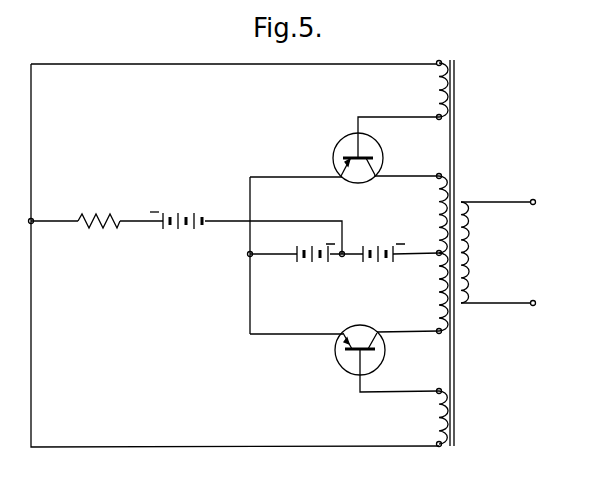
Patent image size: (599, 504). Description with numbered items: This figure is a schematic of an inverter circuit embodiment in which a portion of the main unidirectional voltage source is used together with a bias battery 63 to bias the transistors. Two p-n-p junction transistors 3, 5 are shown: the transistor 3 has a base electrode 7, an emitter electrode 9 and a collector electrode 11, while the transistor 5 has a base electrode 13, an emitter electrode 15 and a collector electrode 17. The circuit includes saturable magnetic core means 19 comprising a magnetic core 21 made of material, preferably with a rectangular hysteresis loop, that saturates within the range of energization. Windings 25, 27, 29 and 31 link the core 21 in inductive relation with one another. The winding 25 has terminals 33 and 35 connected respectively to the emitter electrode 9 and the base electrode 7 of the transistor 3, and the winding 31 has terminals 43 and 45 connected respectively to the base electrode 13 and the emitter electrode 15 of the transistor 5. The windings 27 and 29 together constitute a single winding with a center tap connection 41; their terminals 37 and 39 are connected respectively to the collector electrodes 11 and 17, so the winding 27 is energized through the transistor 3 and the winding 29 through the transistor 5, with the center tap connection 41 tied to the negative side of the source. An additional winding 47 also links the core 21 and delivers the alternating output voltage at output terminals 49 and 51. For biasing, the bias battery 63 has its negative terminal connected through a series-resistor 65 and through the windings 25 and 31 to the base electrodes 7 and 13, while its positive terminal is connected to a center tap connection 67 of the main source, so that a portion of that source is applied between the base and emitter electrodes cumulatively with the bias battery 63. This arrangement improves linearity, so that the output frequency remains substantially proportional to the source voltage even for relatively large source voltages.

The transistor 3 is at (344, 150).
The transistor 5 is at (344, 358).
The base electrode 7 is at (341, 148).
The emitter electrode 9 is at (296, 165).
The collector electrode 11 is at (383, 167).
The base electrode 13 is at (341, 358).
The emitter electrode 15 is at (338, 340).
The collector electrode 17 is at (383, 340).
The saturable magnetic core means 19 is at (480, 252).
The magnetic core 21 is at (455, 134).
The winding 25 is at (437, 88).
The winding 27 is at (438, 214).
The winding 29 is at (438, 296).
The winding 31 is at (438, 418).
The terminal 33 is at (443, 52).
The terminal 35 is at (438, 120).
The terminal 37 is at (438, 174).
The terminal 39 is at (440, 334).
The center tap connection 41 is at (423, 243).
The terminal 43 is at (440, 389).
The terminal 45 is at (441, 448).
The additional winding 47 is at (468, 245).
The output terminal 49 is at (536, 202).
The output terminal 51 is at (536, 303).
The bias battery 63 is at (189, 214).
The series-resistor 65 is at (100, 215).
The center tap connection 67 is at (342, 260).